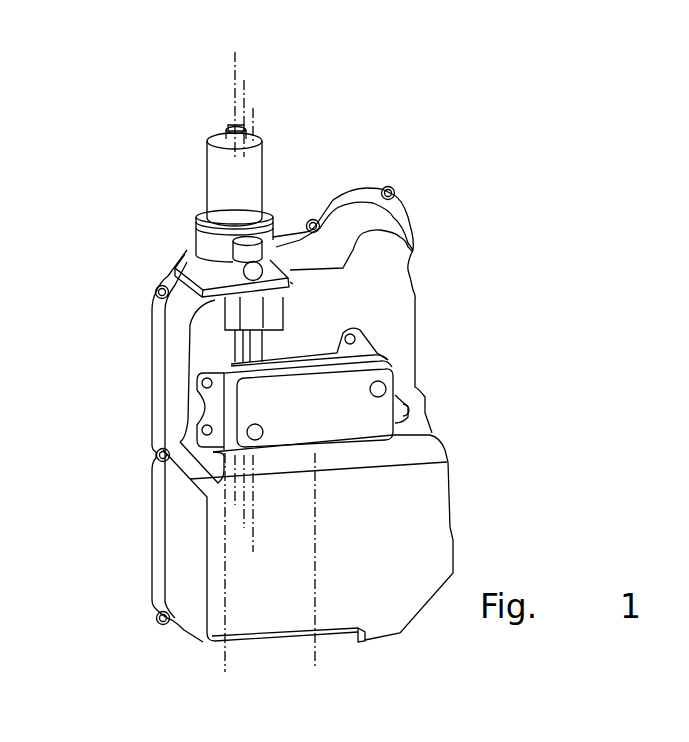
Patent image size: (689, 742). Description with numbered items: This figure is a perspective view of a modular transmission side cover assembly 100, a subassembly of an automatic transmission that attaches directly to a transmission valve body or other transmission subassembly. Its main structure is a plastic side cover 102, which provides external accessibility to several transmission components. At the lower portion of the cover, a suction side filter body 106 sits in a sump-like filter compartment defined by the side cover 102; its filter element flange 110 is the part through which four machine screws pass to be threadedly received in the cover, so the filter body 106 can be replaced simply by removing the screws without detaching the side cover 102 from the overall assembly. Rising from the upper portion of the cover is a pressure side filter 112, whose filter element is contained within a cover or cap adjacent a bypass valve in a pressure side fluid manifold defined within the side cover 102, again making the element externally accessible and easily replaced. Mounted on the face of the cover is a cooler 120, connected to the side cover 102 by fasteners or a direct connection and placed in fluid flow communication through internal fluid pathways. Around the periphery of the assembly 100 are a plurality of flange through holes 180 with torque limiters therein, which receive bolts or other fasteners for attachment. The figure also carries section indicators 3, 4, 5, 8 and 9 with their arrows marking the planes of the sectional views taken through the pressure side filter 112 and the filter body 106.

The modular transmission side cover assembly 100 is at (130, 216).
The plastic side cover 102 is at (397, 305).
The suction side filter body 106 is at (200, 666).
The filter element flange 110 is at (290, 642).
The pressure side filter 112 is at (193, 133).
The cooler 120 is at (377, 405).
The flange through holes 180 is at (312, 221).
The section line 3 is at (227, 65).
The section line 4 is at (237, 90).
The section line 5 is at (247, 117).
The section line 8 is at (217, 466).
The section line 9 is at (303, 460).